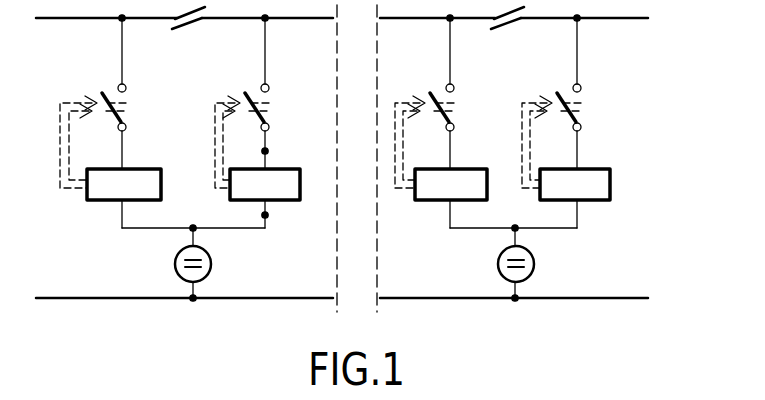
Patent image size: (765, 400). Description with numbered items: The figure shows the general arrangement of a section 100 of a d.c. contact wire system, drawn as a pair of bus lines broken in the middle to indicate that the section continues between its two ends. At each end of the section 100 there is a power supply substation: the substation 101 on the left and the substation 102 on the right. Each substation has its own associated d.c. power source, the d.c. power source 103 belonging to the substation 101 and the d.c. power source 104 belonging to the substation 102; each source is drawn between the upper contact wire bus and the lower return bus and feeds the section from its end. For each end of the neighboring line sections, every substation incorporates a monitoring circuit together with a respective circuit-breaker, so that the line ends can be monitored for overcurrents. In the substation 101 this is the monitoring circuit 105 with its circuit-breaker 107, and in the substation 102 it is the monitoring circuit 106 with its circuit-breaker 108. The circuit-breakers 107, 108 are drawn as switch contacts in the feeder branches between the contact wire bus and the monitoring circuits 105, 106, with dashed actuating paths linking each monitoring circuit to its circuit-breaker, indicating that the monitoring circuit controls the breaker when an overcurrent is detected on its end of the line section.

The section of d.c. contact wire system 100 is at (401, 19).
The substation 101 is at (210, 345).
The substation 102 is at (535, 340).
The d.c. power source 103 is at (211, 265).
The d.c. power source 104 is at (534, 265).
The monitoring circuit 105 is at (297, 168).
The monitoring circuit 106 is at (477, 168).
The circuit-breaker 107 is at (247, 98).
The circuit-breaker 108 is at (448, 108).